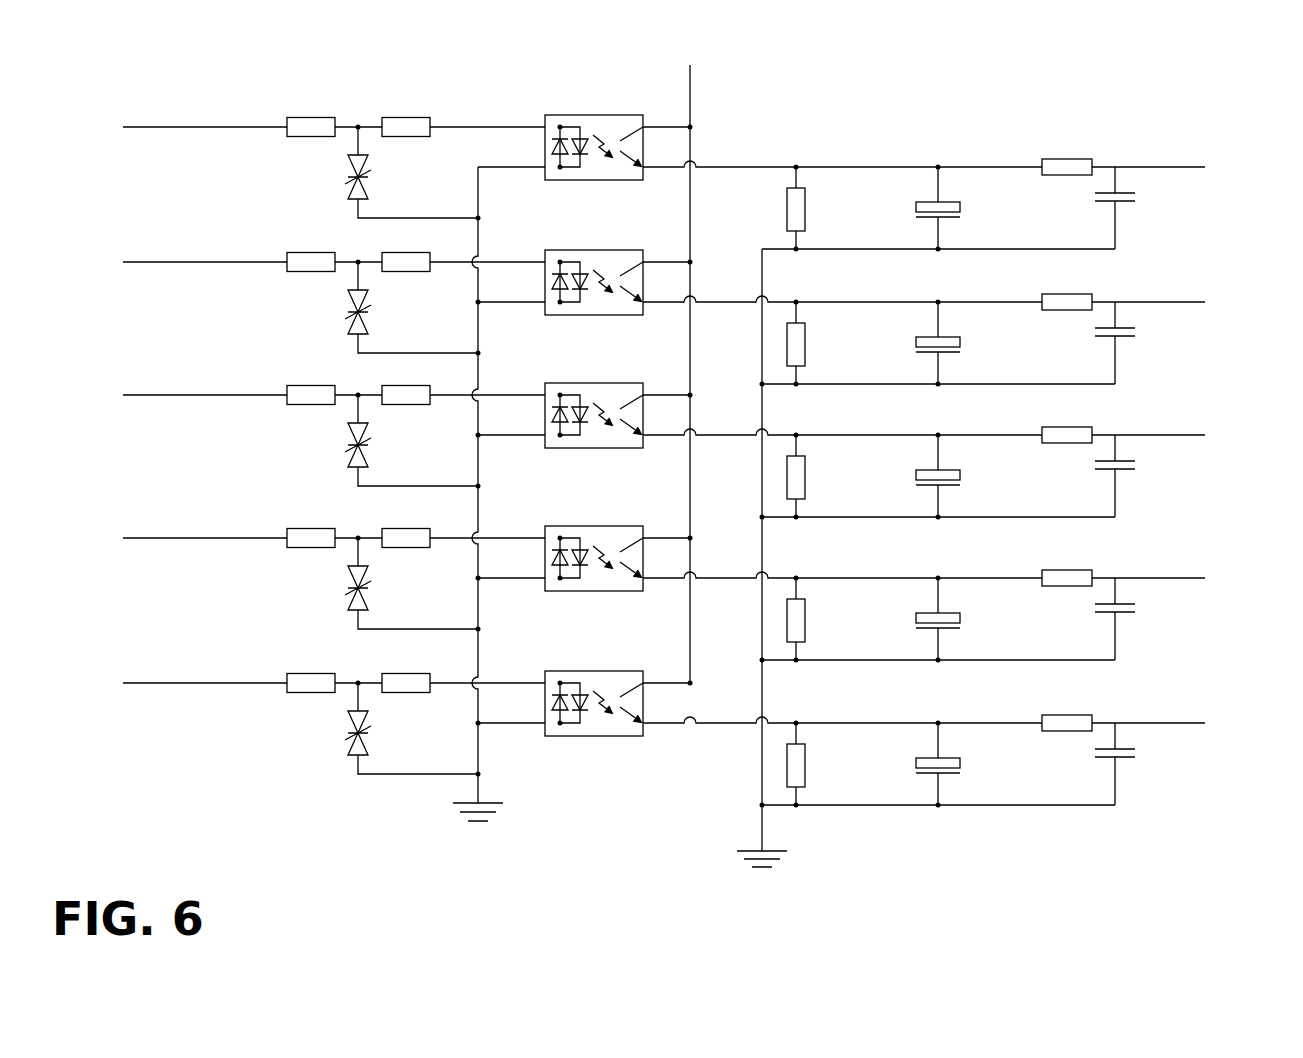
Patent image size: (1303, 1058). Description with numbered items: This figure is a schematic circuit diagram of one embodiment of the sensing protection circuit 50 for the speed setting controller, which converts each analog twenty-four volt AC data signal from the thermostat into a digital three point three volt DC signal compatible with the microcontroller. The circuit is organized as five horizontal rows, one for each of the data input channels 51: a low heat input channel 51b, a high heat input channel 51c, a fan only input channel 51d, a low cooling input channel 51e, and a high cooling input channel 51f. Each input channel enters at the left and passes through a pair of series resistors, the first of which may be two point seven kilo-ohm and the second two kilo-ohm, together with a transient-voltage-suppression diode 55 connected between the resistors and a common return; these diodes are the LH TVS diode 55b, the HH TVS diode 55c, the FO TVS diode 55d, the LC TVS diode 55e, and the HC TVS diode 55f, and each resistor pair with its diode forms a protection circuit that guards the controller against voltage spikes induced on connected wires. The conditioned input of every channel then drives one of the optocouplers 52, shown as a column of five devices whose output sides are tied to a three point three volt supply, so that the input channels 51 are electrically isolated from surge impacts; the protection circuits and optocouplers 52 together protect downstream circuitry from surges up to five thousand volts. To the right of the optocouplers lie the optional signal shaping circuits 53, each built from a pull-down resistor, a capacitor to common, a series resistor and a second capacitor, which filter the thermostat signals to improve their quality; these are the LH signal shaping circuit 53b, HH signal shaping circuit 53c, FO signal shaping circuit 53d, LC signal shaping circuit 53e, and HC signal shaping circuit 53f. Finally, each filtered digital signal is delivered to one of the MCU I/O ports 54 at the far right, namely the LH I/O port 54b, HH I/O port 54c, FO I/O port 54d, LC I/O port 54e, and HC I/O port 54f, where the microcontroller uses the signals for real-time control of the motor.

The sensing protection circuit 50 is at (670, 456).
The data input channels 51 is at (296, 380).
The low heat (LH) input channel 51b is at (296, 138).
The high heat (HH) input channel 51c is at (296, 273).
The fan only (FO) input channel 51d is at (296, 406).
The low cooling (LC) input channel 51e is at (296, 549).
The high cooling (HC) input channel 51f is at (296, 694).
The optocouplers 52 is at (584, 381).
The signal shaping circuits 53 is at (938, 430).
The LH signal shaping circuit 53b is at (938, 182).
The HH signal shaping circuit 53c is at (938, 317).
The FO signal shaping circuit 53d is at (938, 450).
The LC signal shaping circuit 53e is at (938, 593).
The HC signal shaping circuit 53f is at (938, 738).
The MCU I/O ports 54 is at (1167, 428).
The LH I/O port 54b is at (1167, 194).
The HH I/O port 54c is at (1166, 329).
The FO I/O port 54d is at (1167, 462).
The LC I/O port 54e is at (1166, 605).
The HC I/O port 54f is at (1164, 750).
The transient-voltage-suppression (TVS) diode 55 is at (371, 501).
The LH TVS diode 55b is at (371, 174).
The HH TVS diode 55c is at (371, 309).
The FO TVS diode 55d is at (371, 442).
The LC TVS diode 55e is at (371, 585).
The HC TVS diode 55f is at (371, 730).